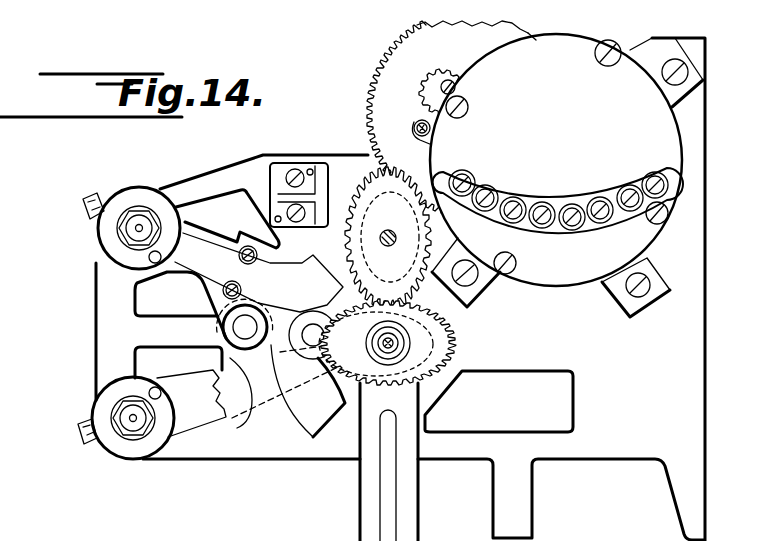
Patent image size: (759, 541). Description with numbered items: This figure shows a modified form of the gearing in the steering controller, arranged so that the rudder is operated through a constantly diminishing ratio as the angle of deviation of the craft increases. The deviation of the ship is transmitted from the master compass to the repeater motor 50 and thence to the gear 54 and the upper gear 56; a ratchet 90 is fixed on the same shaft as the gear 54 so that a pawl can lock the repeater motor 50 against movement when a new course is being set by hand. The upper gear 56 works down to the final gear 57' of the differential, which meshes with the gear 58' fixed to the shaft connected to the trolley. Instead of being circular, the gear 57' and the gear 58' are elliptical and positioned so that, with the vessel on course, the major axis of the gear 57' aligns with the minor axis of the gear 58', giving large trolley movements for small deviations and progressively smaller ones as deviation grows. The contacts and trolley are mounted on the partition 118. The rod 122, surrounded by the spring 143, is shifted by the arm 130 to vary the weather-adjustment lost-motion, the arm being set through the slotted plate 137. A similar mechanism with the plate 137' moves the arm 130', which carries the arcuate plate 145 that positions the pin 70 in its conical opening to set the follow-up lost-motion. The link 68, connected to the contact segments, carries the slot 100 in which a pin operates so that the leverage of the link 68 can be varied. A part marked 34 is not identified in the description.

The repeater motor 50 is at (556, 160).
The gear 54 is at (514, 28).
The upper gear 56 is at (388, 238).
The final gear of the differential 57' is at (412, 146).
The elliptical gear 58' is at (471, 327).
The link 68 is at (410, 488).
The pin 70 is at (312, 345).
The ratchet 90 is at (445, 86).
The slot 100 is at (386, 473).
The partition 118 is at (400, 289).
The rod 122 is at (384, 344).
The arm 130 is at (192, 403).
The arm 130' is at (227, 219).
The plate 137 is at (126, 439).
The plate 137' is at (116, 241).
The spring 143 is at (393, 343).
The arcuate plate 145 is at (259, 291).
The shaft 34 is at (281, 535).